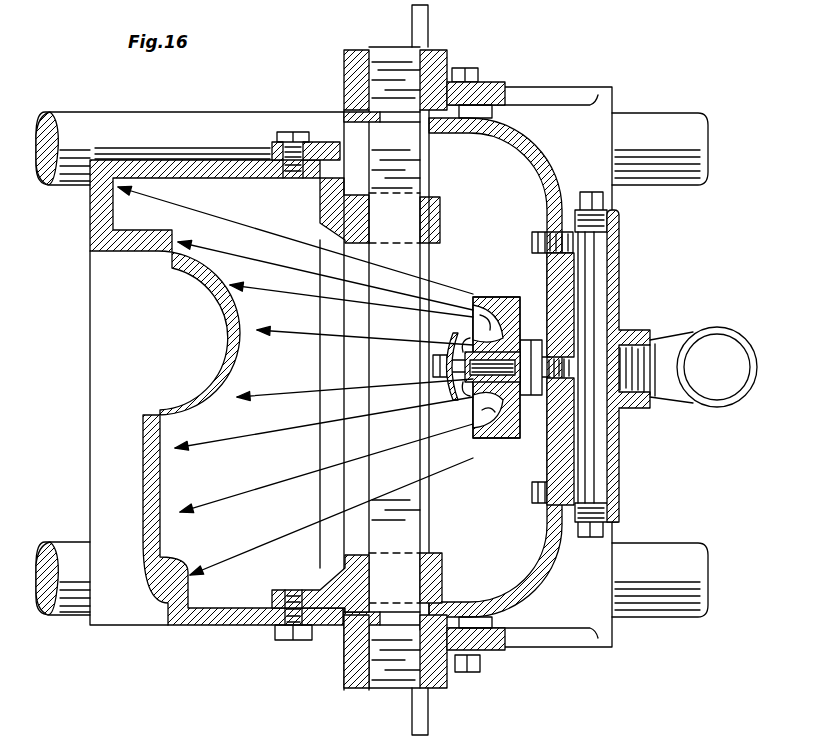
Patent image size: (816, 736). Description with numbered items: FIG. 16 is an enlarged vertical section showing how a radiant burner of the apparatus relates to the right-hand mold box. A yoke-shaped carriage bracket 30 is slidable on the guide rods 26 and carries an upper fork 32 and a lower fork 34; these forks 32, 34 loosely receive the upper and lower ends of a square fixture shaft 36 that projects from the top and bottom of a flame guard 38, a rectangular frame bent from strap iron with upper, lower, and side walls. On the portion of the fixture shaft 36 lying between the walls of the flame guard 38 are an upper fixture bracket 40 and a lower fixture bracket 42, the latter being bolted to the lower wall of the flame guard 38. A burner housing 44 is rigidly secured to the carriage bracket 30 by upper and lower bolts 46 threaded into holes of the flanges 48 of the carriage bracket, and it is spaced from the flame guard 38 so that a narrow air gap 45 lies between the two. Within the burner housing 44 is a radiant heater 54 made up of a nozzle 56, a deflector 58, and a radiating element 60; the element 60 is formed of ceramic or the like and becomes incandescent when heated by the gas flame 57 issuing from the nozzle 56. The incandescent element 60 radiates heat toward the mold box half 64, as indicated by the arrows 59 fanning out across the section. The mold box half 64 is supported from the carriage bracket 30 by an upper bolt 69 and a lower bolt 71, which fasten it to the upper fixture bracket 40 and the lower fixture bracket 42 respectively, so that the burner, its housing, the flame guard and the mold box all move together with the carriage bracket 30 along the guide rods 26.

The guide rods 26 is at (62, 120).
The carriage bracket 30 is at (588, 122).
The upper fork 32 is at (350, 58).
The lower fork 34 is at (348, 680).
The fixture shaft 36 is at (407, 540).
The flame guard 38 is at (347, 114).
The upper fixture bracket 40 is at (336, 212).
The lower fixture bracket 42 is at (446, 575).
The burner housing 44 is at (530, 152).
The air gap 45 is at (425, 262).
The bolts 46 is at (477, 74).
The flanges 48 is at (505, 93).
The radiant heater 54 is at (496, 300).
The nozzle 56 is at (524, 345).
The gas flame 57 is at (497, 362).
The deflector 58 is at (445, 338).
The arrows 59 is at (205, 215).
The radiating element 60 is at (505, 438).
The mold box half 64 is at (214, 612).
The upper bolt 69 is at (280, 134).
The lower bolt 71 is at (290, 641).